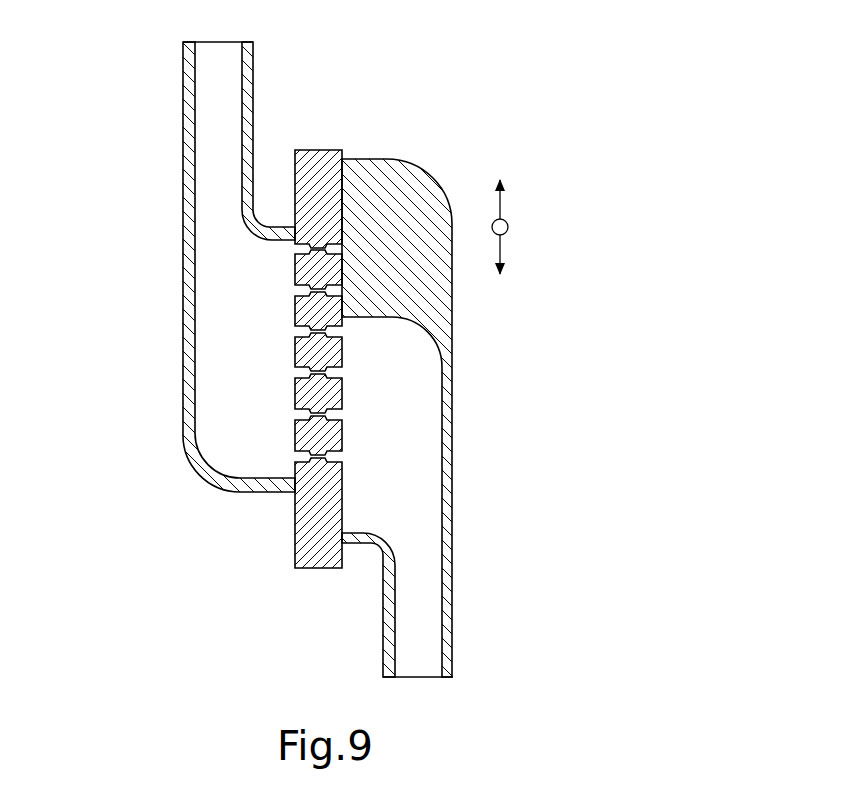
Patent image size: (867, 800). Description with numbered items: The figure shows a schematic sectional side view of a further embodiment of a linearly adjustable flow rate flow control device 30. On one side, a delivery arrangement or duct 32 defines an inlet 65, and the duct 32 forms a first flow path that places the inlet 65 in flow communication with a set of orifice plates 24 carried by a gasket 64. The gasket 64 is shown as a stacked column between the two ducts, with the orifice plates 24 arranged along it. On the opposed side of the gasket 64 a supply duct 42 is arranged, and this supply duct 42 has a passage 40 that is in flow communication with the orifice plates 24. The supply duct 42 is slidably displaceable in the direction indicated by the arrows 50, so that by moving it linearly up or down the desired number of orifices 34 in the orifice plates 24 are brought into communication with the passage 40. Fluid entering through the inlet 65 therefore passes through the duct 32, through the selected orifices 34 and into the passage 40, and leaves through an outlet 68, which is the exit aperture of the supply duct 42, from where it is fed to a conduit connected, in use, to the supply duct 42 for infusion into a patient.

The flow control device 30 is at (604, 131).
The duct 32 is at (188, 65).
The inlet 65 is at (230, 120).
The gasket 64 is at (325, 150).
The orifice plates 24 is at (297, 253).
The orifices 34 is at (317, 305).
The passage 40 is at (415, 416).
The supply duct 42 is at (452, 497).
The outlet 68 is at (428, 653).
The arrows 50 is at (508, 227).